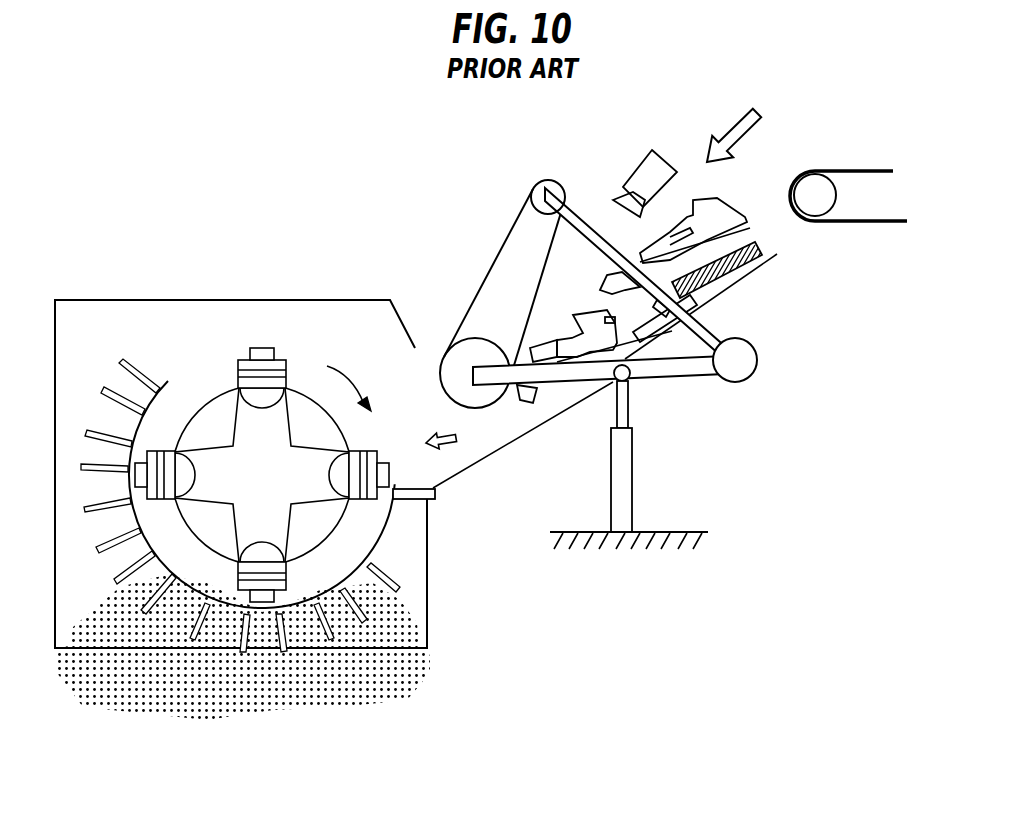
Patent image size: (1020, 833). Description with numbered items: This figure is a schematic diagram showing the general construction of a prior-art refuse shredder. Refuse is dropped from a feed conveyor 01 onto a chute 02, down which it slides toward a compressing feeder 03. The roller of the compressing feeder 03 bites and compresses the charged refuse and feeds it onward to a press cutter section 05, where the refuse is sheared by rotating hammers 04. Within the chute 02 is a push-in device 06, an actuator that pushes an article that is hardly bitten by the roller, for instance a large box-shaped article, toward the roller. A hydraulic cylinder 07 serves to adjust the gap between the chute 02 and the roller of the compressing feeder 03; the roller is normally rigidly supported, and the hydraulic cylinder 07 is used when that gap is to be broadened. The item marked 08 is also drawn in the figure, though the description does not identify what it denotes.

The feed conveyor 01 is at (851, 170).
The chute 02 is at (702, 295).
The compressing feeder 03 is at (492, 268).
The rotating hammers 04 is at (262, 338).
The press cutter section 05 is at (437, 500).
The push-in device 06 is at (718, 290).
The hydraulic cylinder 07 is at (634, 465).
The falling piece 08 is at (626, 180).